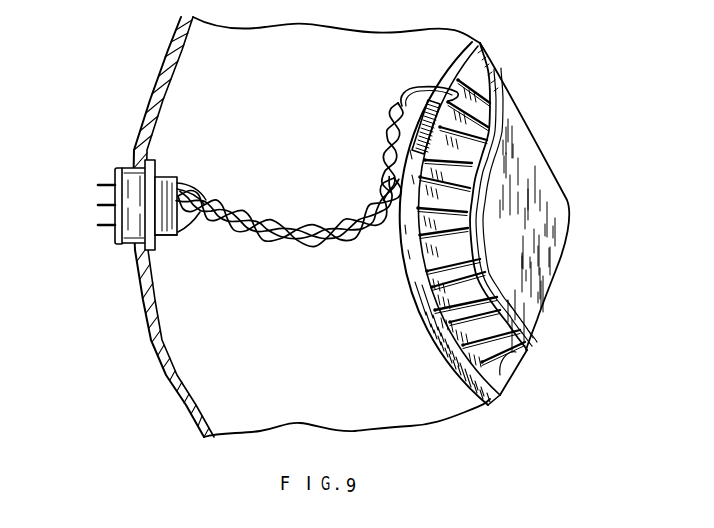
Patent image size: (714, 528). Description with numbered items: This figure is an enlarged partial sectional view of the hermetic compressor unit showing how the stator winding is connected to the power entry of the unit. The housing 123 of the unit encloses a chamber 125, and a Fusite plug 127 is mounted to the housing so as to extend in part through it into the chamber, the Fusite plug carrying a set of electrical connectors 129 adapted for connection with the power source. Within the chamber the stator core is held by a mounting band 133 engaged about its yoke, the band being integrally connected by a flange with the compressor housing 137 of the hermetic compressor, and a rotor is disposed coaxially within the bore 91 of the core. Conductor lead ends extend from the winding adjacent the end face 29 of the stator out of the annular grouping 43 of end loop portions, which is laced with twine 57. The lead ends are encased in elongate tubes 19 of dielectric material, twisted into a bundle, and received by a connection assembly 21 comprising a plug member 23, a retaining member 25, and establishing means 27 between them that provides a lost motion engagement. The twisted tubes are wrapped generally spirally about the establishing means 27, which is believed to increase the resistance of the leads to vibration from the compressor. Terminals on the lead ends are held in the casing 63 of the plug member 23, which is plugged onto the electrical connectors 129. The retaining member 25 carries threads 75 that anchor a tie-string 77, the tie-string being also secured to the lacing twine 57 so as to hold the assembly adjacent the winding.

The elongate tubes 19 is at (295, 221).
The connection assembly 21 is at (264, 262).
The plug member 23 is at (171, 163).
The retaining member 25 is at (397, 147).
The establishing means 27 is at (308, 250).
The end face 29 is at (437, 307).
The annular grouping of end loop portions 43 is at (513, 350).
The lacing twine 57 is at (507, 358).
The casing 63 is at (178, 236).
The threads 75 is at (416, 125).
The tie-string 77 is at (408, 99).
The bore 91 is at (500, 122).
The housing 123 is at (157, 338).
The chamber 125 is at (193, 360).
The Fusite plug 127 is at (111, 255).
The electrical connectors 129 is at (100, 225).
The mounting band 133 is at (458, 367).
The compressor housing 137 is at (540, 165).